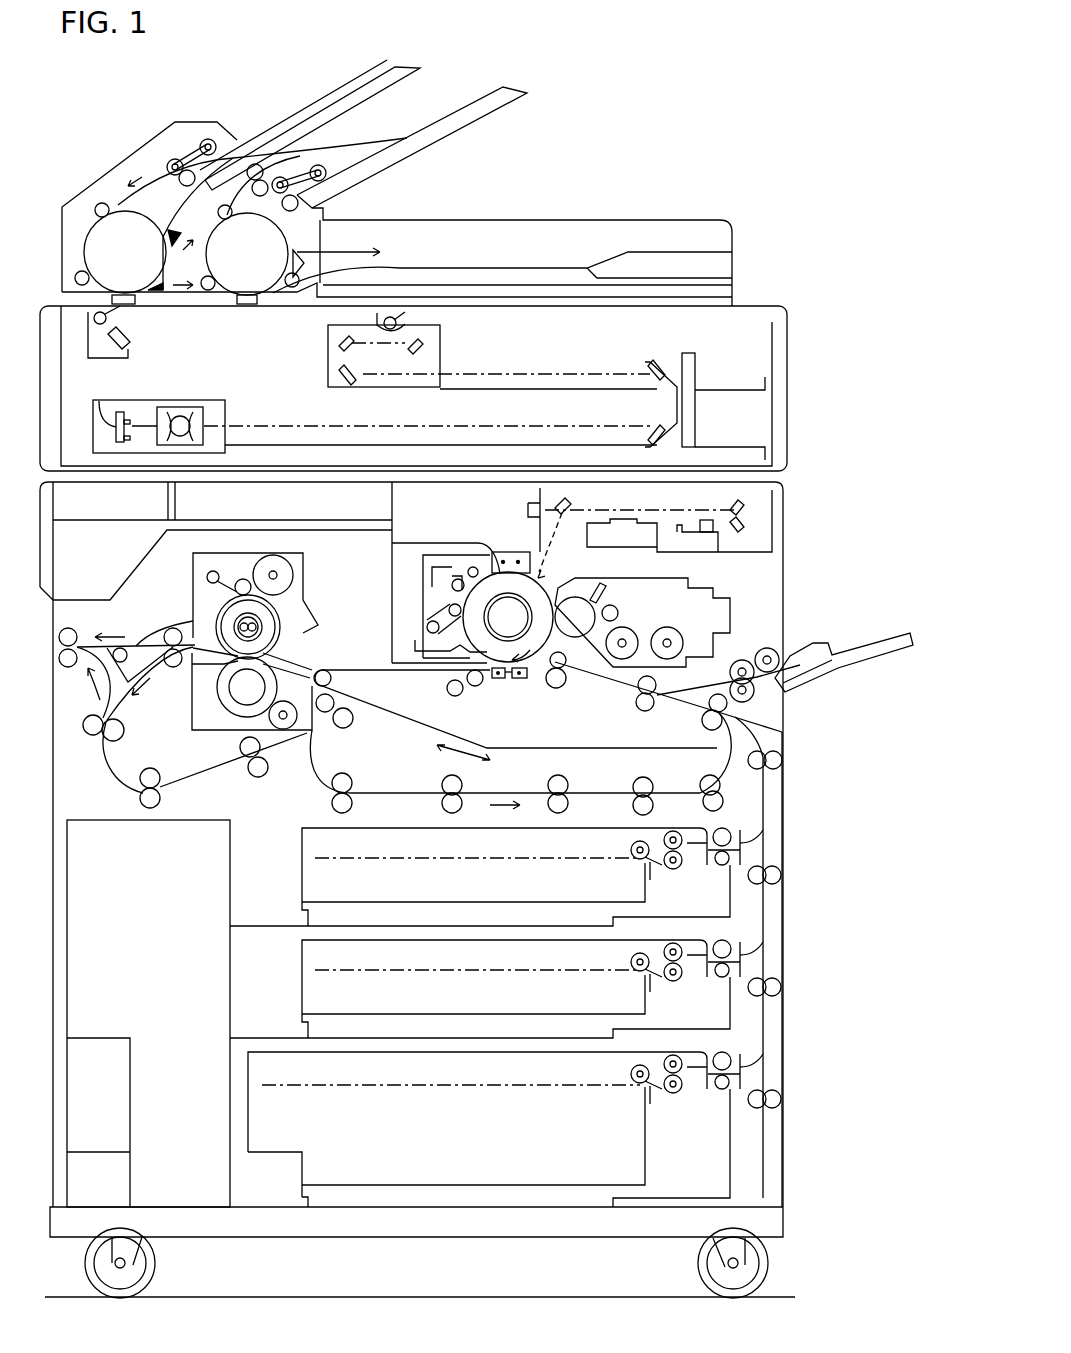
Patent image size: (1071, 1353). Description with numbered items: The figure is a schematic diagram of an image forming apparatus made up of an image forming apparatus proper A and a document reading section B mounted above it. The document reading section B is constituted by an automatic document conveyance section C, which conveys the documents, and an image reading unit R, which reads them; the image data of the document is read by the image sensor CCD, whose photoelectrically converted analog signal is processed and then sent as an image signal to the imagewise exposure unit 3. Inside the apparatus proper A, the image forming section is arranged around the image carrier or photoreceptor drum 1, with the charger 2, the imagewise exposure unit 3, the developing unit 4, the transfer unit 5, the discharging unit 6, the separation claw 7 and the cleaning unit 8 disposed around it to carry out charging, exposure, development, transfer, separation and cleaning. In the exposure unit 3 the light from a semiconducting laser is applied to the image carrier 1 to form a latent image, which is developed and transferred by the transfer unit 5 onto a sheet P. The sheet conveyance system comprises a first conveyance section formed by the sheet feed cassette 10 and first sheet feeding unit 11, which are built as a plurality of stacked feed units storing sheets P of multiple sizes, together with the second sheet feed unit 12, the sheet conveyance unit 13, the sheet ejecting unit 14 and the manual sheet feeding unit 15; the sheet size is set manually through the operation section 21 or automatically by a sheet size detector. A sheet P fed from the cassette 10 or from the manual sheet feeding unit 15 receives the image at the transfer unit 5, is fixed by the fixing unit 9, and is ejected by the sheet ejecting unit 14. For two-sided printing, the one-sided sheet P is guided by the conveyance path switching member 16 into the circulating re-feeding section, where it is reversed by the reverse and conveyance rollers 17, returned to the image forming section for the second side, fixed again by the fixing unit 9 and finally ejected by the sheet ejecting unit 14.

The image carrier (photoreceptor drum) 1 is at (492, 585).
The charger 2 is at (510, 551).
The imagewise exposure unit (image writing unit) 3 is at (757, 512).
The developing unit 4 is at (683, 605).
The transfer unit 5 is at (520, 679).
The discharging unit 6 is at (500, 679).
The separation claw 7 is at (415, 645).
The cleaning unit 8 is at (455, 586).
The fixing unit 9 is at (205, 565).
The sheet feed cassette 10 is at (302, 850).
The first sheet feeding unit 11 is at (675, 870).
The second sheet feed unit 12 is at (643, 697).
The sheet conveyance unit 13 is at (413, 697).
The sheet ejecting unit 14 is at (66, 630).
The manual sheet feeding unit 15 is at (765, 650).
The conveyance path switching member 16 is at (133, 657).
The reverse and conveyance rollers 17 is at (347, 728).
The operation section 21 is at (342, 510).
The image forming apparatus proper A is at (833, 507).
The document reading section B is at (771, 263).
The automatic document conveyance section C is at (525, 204).
The image reading unit R is at (749, 361).
The sheet P is at (868, 635).
The image sensor CCD is at (148, 409).